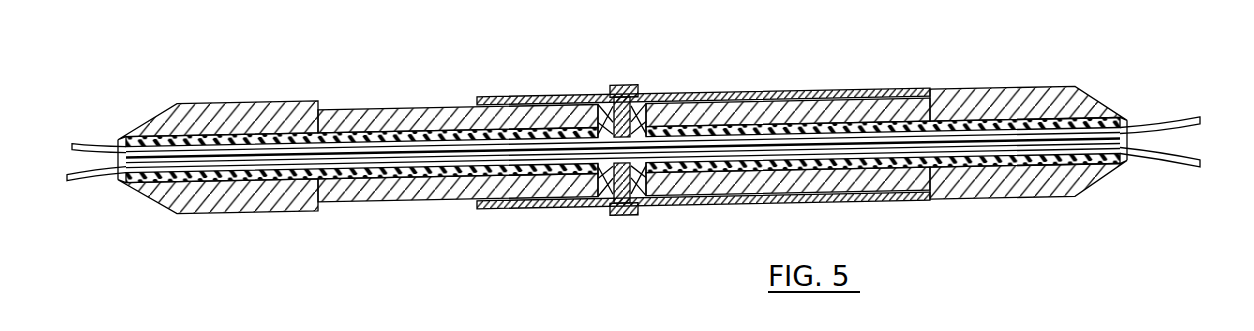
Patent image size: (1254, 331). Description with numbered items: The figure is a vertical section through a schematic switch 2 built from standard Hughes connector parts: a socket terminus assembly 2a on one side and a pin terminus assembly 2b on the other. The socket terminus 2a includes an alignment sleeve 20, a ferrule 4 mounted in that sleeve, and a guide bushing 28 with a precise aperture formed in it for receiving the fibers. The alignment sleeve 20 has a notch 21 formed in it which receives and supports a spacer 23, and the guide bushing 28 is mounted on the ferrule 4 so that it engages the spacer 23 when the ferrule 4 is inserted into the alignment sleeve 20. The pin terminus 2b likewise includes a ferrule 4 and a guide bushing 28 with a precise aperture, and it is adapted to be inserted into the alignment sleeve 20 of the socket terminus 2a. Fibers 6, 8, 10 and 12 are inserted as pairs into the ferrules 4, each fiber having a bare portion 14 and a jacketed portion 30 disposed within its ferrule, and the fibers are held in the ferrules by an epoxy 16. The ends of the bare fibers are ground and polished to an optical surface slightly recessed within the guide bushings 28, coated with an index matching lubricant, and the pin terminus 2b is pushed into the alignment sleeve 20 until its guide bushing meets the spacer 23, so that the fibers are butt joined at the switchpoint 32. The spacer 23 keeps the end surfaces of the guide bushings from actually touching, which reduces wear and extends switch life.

The switch 2 is at (633, 145).
The socket terminus assembly 2a is at (862, 88).
The pin terminus assembly 2b is at (338, 108).
The ferrule 4 is at (287, 97).
The fiber 6 is at (93, 143).
The fiber 8 is at (90, 180).
The fiber 10 is at (1167, 120).
The fiber 12 is at (1142, 163).
The bare portion 14 is at (473, 170).
The epoxy 16 is at (213, 183).
The alignment sleeve 20 is at (682, 210).
The notch 21 is at (635, 93).
The spacer 23 is at (610, 207).
The guide bushing 28 is at (583, 97).
The jacketed portion 30 is at (262, 193).
The switchpoint 32 is at (625, 82).